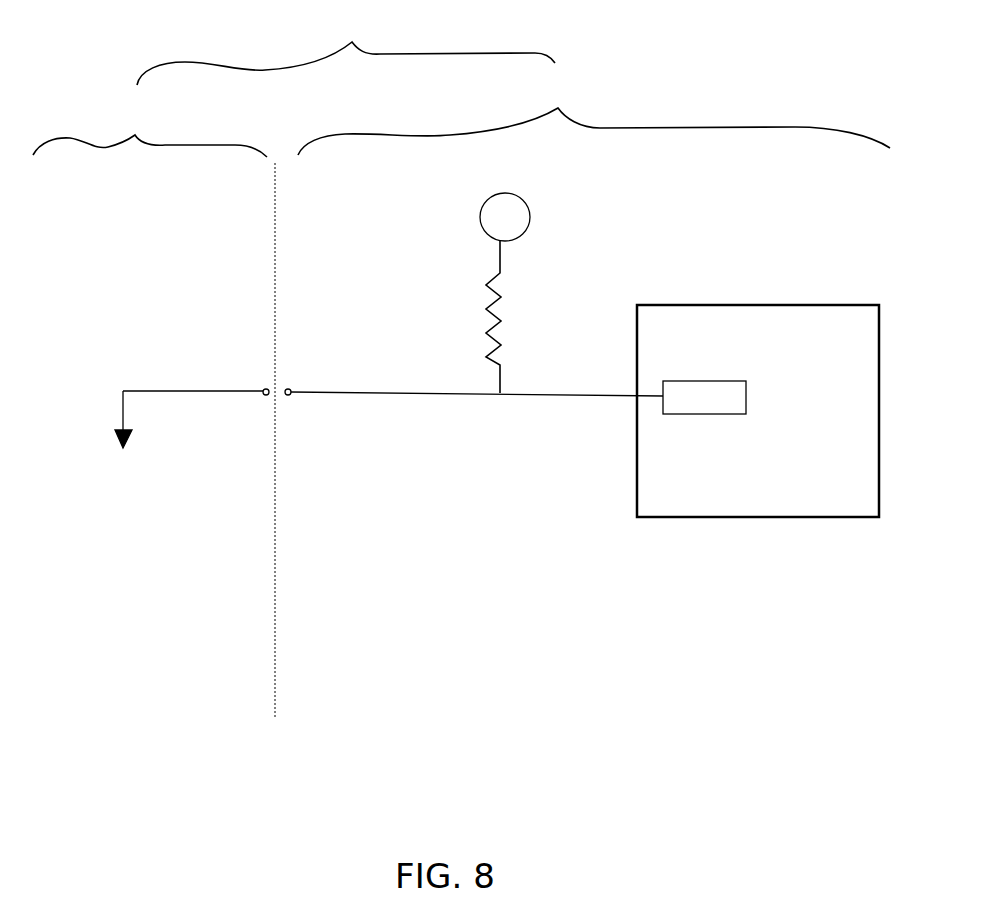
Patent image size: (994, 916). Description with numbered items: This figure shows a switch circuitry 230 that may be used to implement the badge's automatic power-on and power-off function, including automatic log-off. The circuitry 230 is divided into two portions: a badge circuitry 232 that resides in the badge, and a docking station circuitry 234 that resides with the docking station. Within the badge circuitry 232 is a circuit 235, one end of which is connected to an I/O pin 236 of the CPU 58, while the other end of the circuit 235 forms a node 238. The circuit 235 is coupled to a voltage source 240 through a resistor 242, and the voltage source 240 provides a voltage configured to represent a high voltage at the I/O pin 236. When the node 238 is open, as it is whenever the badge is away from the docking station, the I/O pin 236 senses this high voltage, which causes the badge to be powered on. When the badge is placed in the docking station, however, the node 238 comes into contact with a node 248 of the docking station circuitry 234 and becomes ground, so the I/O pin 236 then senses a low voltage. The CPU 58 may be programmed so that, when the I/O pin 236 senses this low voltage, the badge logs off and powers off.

The circuitry 230 is at (346, 47).
The badge circuitry 232 is at (594, 146).
The docking station circuitry 234 is at (150, 155).
The circuit 235 is at (375, 394).
The I/O pin 236 is at (730, 414).
The node 238 is at (290, 390).
The voltage source 240 is at (505, 217).
The resistor 242 is at (476, 318).
The node 248 is at (263, 389).
The CPU 58 is at (808, 365).